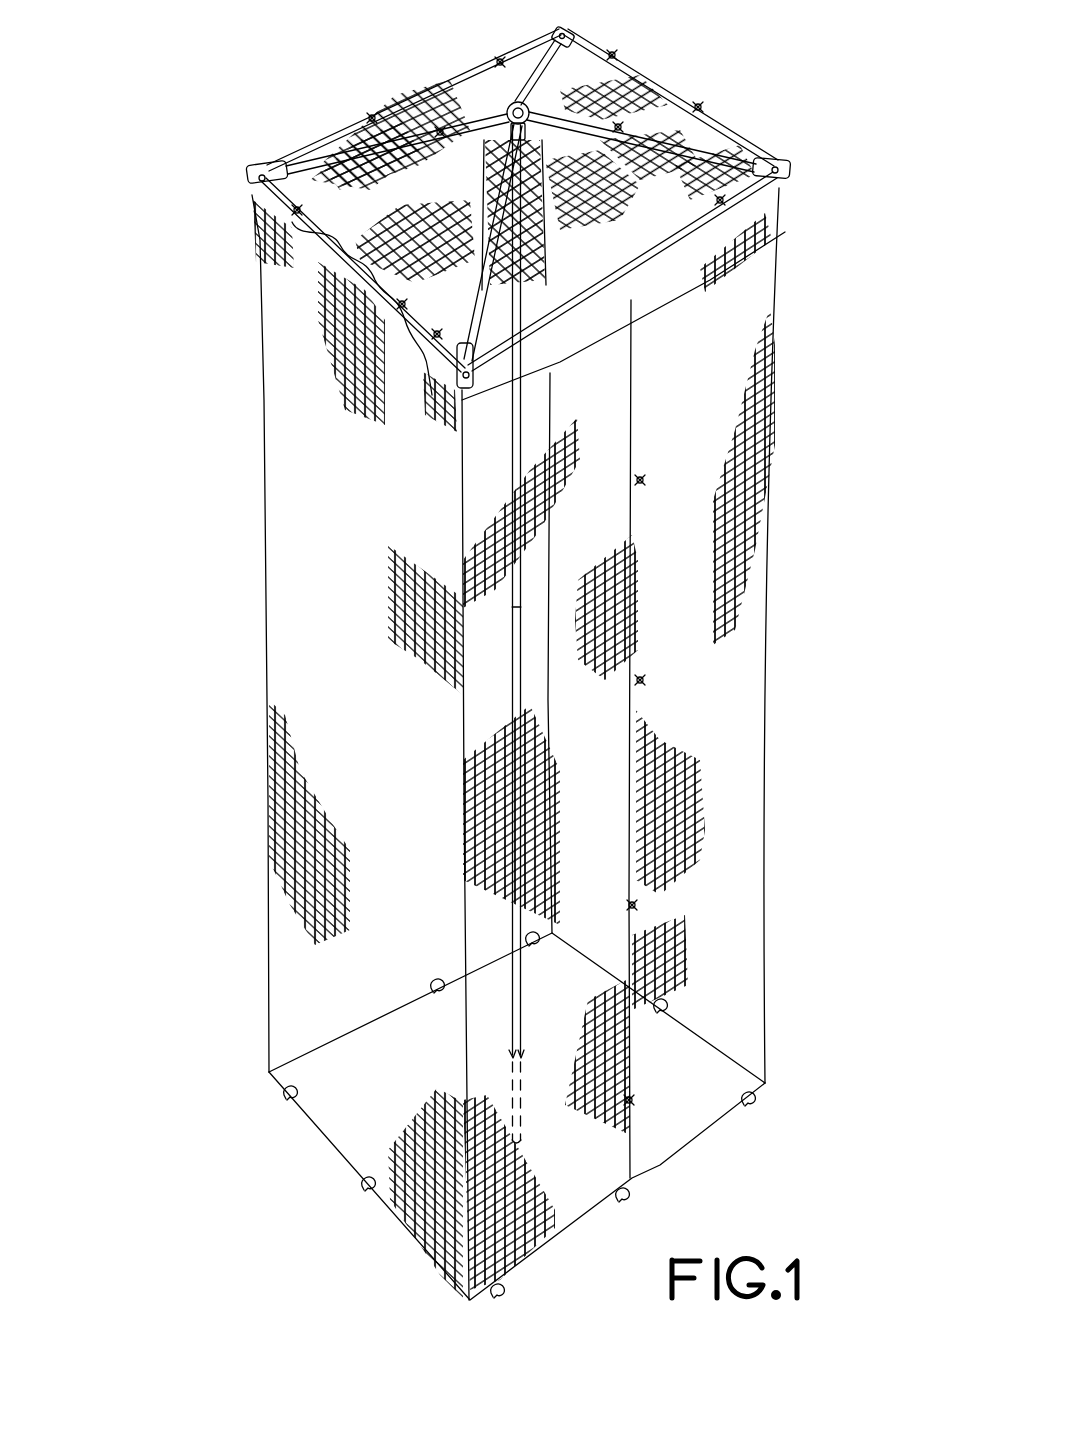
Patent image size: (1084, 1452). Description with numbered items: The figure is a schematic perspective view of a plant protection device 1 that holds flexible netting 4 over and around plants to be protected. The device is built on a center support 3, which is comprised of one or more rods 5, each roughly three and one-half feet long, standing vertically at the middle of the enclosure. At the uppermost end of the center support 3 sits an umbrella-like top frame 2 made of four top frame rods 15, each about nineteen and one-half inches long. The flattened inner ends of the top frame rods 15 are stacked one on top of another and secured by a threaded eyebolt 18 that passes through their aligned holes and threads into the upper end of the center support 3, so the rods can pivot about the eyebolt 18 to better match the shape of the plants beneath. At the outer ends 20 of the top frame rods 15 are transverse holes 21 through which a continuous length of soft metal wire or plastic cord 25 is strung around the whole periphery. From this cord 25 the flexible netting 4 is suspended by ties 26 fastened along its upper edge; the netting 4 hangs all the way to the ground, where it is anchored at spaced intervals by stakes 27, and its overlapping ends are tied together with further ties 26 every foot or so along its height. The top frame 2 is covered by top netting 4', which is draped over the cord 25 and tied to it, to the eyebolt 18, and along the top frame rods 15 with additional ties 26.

The plant protection device 1 is at (292, 118).
The top frame 2 is at (672, 122).
The center support 3 is at (508, 679).
The flexible netting 4 is at (533, 749).
The top netting 4' is at (715, 132).
The rods 5 is at (528, 938).
The top frame rods 15 is at (397, 143).
The threaded eyebolt 18 is at (516, 100).
The outer ends 20 is at (258, 170).
The transverse holes 21 is at (262, 182).
The cord 25 is at (343, 263).
The ties 26 is at (500, 62).
The stakes 27 is at (760, 1100).